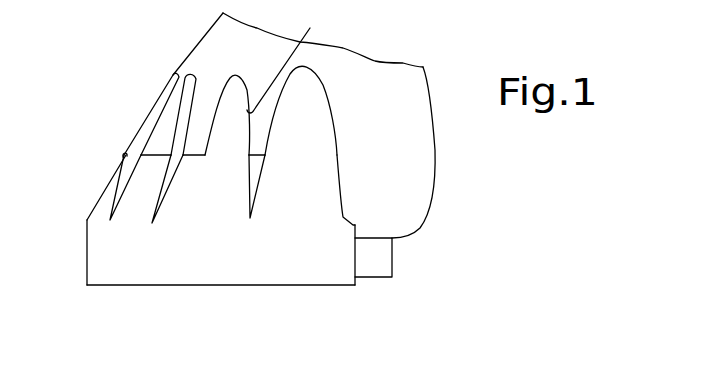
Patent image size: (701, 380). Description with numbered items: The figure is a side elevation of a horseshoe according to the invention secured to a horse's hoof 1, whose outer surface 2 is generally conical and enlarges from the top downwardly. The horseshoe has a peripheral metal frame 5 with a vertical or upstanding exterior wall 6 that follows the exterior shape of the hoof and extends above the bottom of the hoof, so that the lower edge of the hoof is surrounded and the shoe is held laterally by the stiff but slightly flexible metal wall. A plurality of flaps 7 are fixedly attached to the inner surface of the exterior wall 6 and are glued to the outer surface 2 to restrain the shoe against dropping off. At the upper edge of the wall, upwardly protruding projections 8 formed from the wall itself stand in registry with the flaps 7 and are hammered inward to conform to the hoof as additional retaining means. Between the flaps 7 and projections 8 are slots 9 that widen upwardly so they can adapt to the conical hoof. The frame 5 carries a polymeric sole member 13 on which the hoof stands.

The hoof 1 is at (366, 46).
The outer surface of the hoof 2 is at (213, 62).
The metal frame 5 is at (197, 262).
The exterior wall 6 is at (85, 253).
The flaps 7 is at (234, 93).
The projections 8 is at (330, 193).
The slots 9 is at (284, 57).
The sole member 13 is at (385, 258).